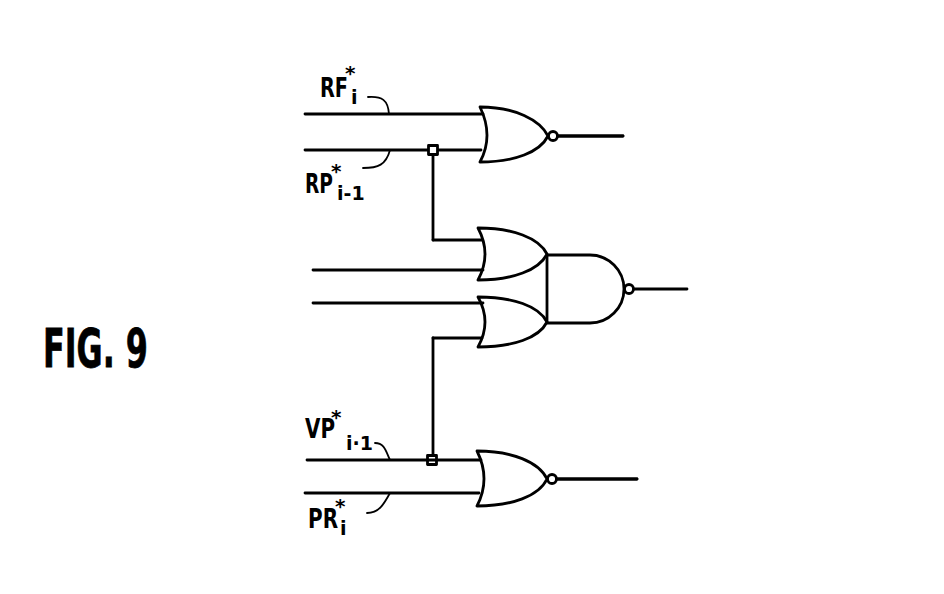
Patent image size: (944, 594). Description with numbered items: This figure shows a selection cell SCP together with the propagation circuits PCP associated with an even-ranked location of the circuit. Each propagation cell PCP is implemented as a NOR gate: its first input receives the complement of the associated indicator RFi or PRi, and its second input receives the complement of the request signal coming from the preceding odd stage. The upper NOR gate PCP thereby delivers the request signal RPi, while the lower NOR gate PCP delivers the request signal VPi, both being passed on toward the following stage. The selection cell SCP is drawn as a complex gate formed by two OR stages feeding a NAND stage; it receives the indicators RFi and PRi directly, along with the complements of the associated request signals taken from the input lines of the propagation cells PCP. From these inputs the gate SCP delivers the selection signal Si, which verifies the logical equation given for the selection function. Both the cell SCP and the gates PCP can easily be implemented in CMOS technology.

The propagation circuit PCP is at (528, 108).
The selection cell SCP is at (560, 242).
The indicator RFi is at (377, 270).
The indicator PRi is at (390, 303).
The selection signal Si is at (663, 289).
The request signal RPi is at (593, 136).
The request signal VPi is at (600, 479).